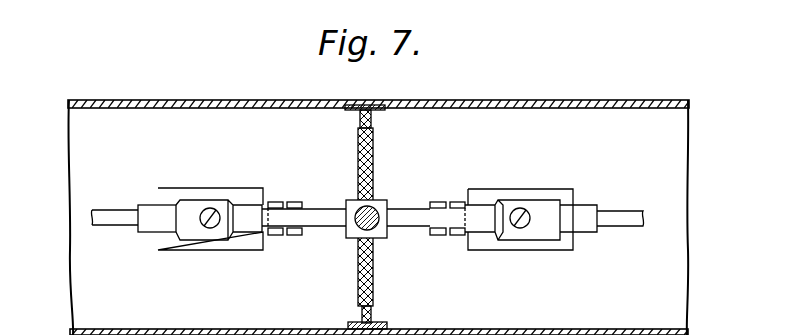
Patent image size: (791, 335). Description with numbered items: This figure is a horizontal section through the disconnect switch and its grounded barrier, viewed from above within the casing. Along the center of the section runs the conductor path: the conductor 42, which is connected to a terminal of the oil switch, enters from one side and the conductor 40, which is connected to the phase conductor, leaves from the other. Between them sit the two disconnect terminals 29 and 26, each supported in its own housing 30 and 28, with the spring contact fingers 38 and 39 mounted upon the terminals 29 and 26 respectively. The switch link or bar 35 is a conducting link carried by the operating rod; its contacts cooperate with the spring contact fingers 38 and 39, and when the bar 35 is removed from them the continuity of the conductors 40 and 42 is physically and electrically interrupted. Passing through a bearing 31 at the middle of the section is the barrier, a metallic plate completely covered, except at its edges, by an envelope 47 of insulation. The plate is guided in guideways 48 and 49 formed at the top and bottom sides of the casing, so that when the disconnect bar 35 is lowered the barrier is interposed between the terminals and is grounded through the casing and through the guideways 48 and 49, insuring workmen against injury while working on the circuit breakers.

The terminal 26 is at (476, 215).
The bearing housing 28 is at (549, 250).
The terminal 29 is at (253, 215).
The bearing housing 30 is at (205, 250).
The bearing 31 is at (358, 215).
The switch link or bar 35 is at (397, 212).
The spring contact finger 38 is at (294, 236).
The spring contact finger 39 is at (452, 203).
The conductor 40 is at (620, 218).
The conductor 42 is at (110, 215).
The envelope of insulation 47 is at (374, 160).
The guideway 48 is at (358, 121).
The guideway 49 is at (378, 323).